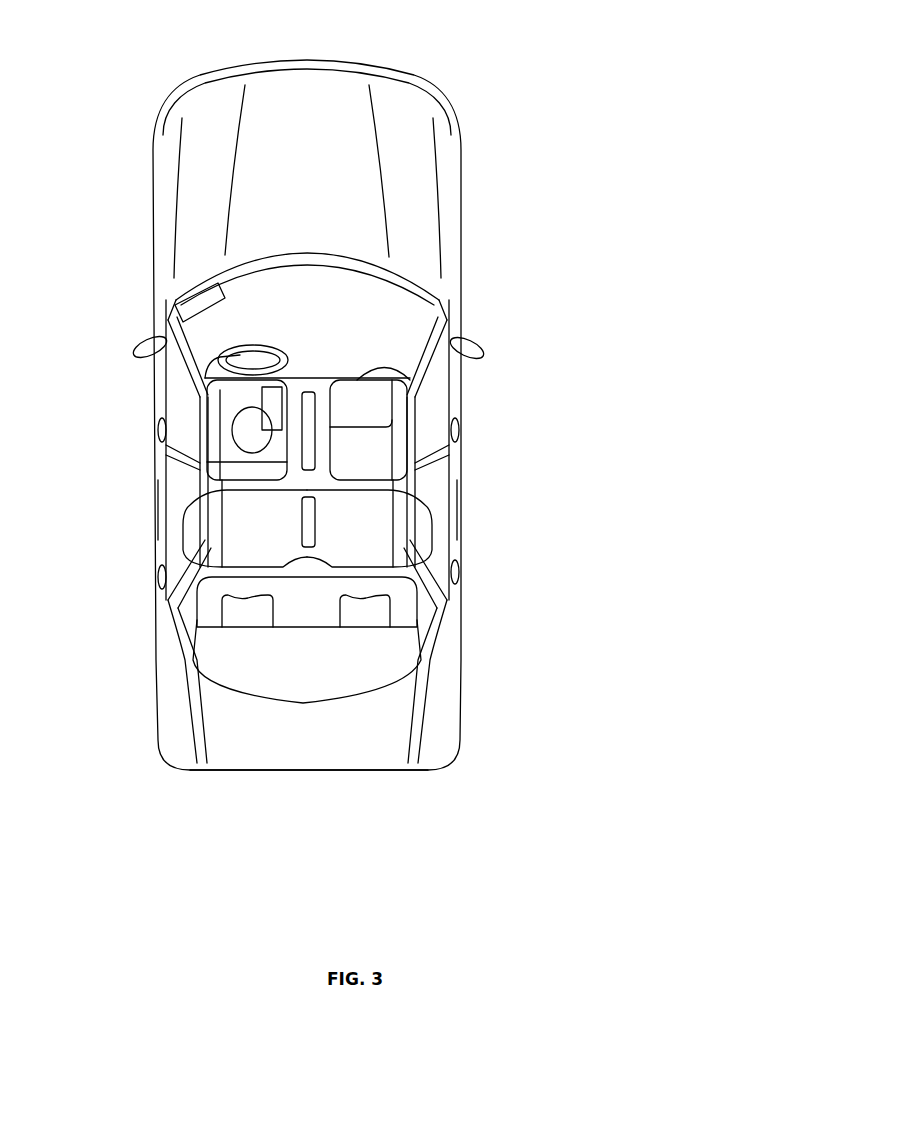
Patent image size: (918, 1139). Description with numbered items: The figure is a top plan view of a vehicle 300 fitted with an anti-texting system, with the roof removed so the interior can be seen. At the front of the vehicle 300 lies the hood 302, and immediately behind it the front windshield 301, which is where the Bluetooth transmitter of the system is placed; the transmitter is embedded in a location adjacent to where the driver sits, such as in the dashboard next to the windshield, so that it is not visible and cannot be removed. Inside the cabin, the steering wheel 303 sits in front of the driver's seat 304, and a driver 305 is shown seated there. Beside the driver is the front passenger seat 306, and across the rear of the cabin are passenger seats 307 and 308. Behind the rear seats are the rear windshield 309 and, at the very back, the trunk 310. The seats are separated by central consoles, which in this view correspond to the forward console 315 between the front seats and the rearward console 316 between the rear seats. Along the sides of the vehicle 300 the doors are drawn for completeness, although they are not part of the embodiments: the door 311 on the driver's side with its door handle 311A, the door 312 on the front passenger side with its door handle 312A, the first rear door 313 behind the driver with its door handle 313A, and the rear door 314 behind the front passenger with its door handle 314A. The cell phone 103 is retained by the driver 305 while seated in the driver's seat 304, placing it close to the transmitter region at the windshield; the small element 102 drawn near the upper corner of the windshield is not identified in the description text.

The vehicle 300 is at (515, 100).
The front windshield 301 is at (304, 257).
The hood 302 is at (299, 113).
The steering wheel 303 is at (253, 345).
The driver's seat 304 is at (262, 463).
The driver 305 is at (232, 425).
The passenger seat 306 is at (360, 392).
The passenger seat 307 is at (257, 542).
The passenger seat 308 is at (370, 530).
The rear windshield 309 is at (300, 703).
The trunk 310 is at (313, 773).
The door on the driver's side 311 is at (140, 347).
The door handle 311A is at (156, 433).
The door on the front passenger side 312 is at (463, 387).
The door handle 312A is at (460, 437).
The first rear door 313 is at (158, 508).
The door handle 313A is at (158, 578).
The rear door 314 is at (462, 498).
The door handle 314A is at (462, 577).
The front center console 315 is at (309, 392).
The rear center console 316 is at (308, 522).
The rear view mirror device 102 is at (177, 308).
The cell phone 103 is at (280, 386).